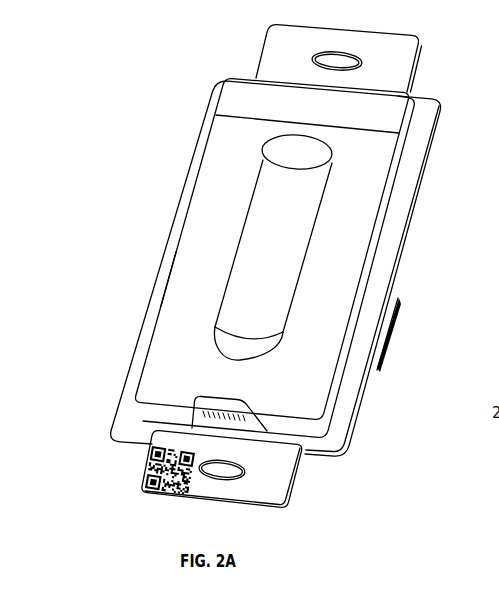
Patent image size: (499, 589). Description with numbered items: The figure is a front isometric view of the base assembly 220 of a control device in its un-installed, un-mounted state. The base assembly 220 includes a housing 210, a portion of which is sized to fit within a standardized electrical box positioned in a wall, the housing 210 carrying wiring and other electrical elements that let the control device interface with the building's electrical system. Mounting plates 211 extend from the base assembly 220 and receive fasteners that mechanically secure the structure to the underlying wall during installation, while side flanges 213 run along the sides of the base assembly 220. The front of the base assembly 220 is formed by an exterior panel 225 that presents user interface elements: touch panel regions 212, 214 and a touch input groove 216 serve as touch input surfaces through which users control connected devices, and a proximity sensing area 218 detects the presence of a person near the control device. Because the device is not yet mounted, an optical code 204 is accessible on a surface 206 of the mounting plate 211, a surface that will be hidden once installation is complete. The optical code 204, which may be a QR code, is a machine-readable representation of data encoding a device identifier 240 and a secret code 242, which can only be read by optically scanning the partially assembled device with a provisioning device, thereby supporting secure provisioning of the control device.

The optical code 204 is at (105, 481).
The surface 206 is at (198, 493).
The housing 210 is at (390, 177).
The mounting plate 211 is at (269, 58).
The touch panel region 212 is at (170, 313).
The side flange 213 is at (392, 278).
The touch panel region 214 is at (213, 227).
The touch input groove 216 is at (280, 208).
The proximity sensing area 218 is at (377, 106).
The base assembly 220 is at (425, 246).
The exterior panel 225 is at (172, 278).
The device identifier 240 is at (105, 481).
The secret code 242 is at (143, 478).